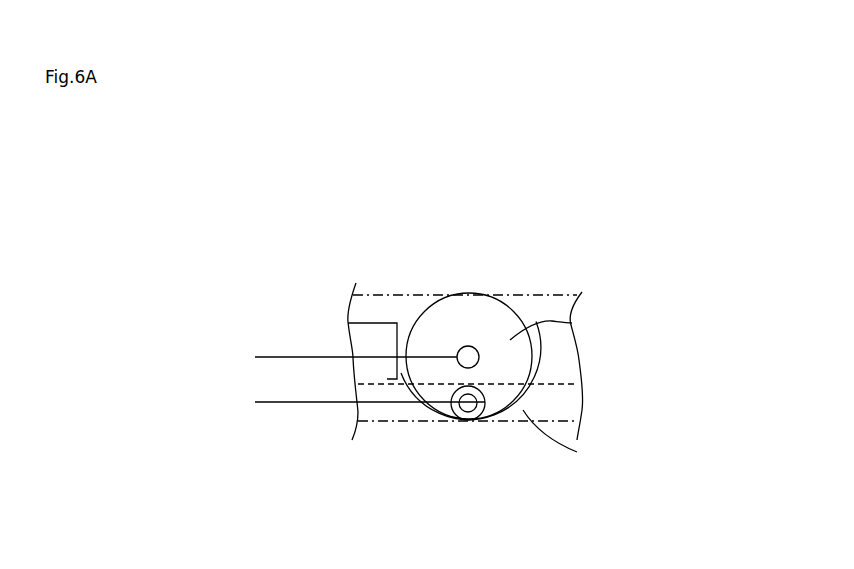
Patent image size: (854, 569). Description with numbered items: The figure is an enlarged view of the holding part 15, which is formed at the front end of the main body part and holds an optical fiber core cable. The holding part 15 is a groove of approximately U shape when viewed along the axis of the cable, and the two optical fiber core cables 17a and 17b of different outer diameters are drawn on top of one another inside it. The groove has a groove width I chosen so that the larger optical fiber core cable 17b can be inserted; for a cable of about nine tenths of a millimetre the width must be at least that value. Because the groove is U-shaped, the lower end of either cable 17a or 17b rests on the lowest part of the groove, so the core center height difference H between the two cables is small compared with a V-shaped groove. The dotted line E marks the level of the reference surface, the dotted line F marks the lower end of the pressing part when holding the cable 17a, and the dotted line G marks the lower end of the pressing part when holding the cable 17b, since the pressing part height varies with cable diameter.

The holding part 15 is at (577, 452).
The optical fiber core cable 17a is at (485, 403).
The optical fiber core cable 17b is at (572, 323).
The dotted line E is at (422, 422).
The dotted line F is at (387, 379).
The dotted line G is at (432, 295).
The core center height difference H is at (279, 415).
The groove width I is at (397, 178).